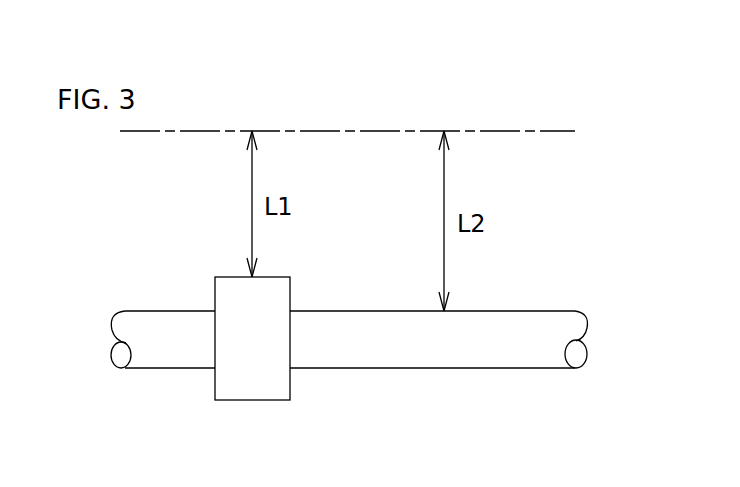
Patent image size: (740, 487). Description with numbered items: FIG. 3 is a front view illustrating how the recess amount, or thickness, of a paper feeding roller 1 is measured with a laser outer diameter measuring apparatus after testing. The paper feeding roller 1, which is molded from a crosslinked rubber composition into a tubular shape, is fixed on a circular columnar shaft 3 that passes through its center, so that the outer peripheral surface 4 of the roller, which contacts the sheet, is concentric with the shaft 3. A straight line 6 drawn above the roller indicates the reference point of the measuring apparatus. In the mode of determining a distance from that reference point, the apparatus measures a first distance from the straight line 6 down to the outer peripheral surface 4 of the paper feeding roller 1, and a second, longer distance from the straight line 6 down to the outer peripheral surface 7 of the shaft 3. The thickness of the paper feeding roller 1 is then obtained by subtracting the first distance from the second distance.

The paper feeding roller 1 is at (253, 401).
The shaft 3 is at (385, 369).
The outer peripheral surface 4 is at (224, 277).
The straight line 6 is at (548, 131).
The outer peripheral surface of the shaft 7 is at (540, 311).